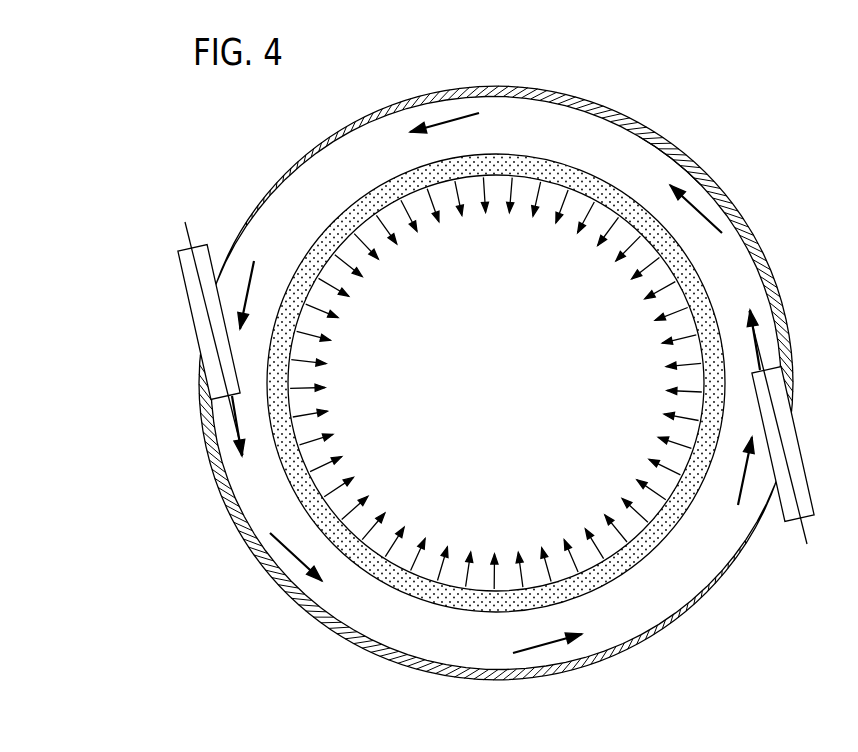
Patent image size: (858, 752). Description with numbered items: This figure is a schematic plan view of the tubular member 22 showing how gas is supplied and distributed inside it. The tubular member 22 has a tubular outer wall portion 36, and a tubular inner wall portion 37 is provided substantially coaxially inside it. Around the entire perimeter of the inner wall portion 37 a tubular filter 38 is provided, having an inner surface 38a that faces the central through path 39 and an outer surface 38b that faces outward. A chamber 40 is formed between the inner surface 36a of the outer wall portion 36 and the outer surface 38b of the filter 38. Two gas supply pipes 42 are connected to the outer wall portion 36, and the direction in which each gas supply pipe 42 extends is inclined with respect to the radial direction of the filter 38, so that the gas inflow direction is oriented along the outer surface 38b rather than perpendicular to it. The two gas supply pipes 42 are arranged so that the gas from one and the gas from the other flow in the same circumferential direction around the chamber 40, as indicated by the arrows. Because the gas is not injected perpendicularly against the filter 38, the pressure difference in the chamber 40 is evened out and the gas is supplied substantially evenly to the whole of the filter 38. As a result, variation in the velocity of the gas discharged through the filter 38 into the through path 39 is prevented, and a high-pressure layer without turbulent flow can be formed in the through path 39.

The tubular member 22 is at (764, 79).
The outer wall portion 36 is at (695, 161).
The inner surface of the outer wall portion 36a is at (658, 156).
The inner wall portion 37 is at (407, 597).
The filter 38 is at (496, 375).
The inner surface of the filter 38a is at (627, 540).
The outer surface of the filter 38b is at (644, 556).
The through path 39 is at (622, 312).
The chamber 40 is at (377, 150).
The gas supply pipe 42 is at (188, 265).